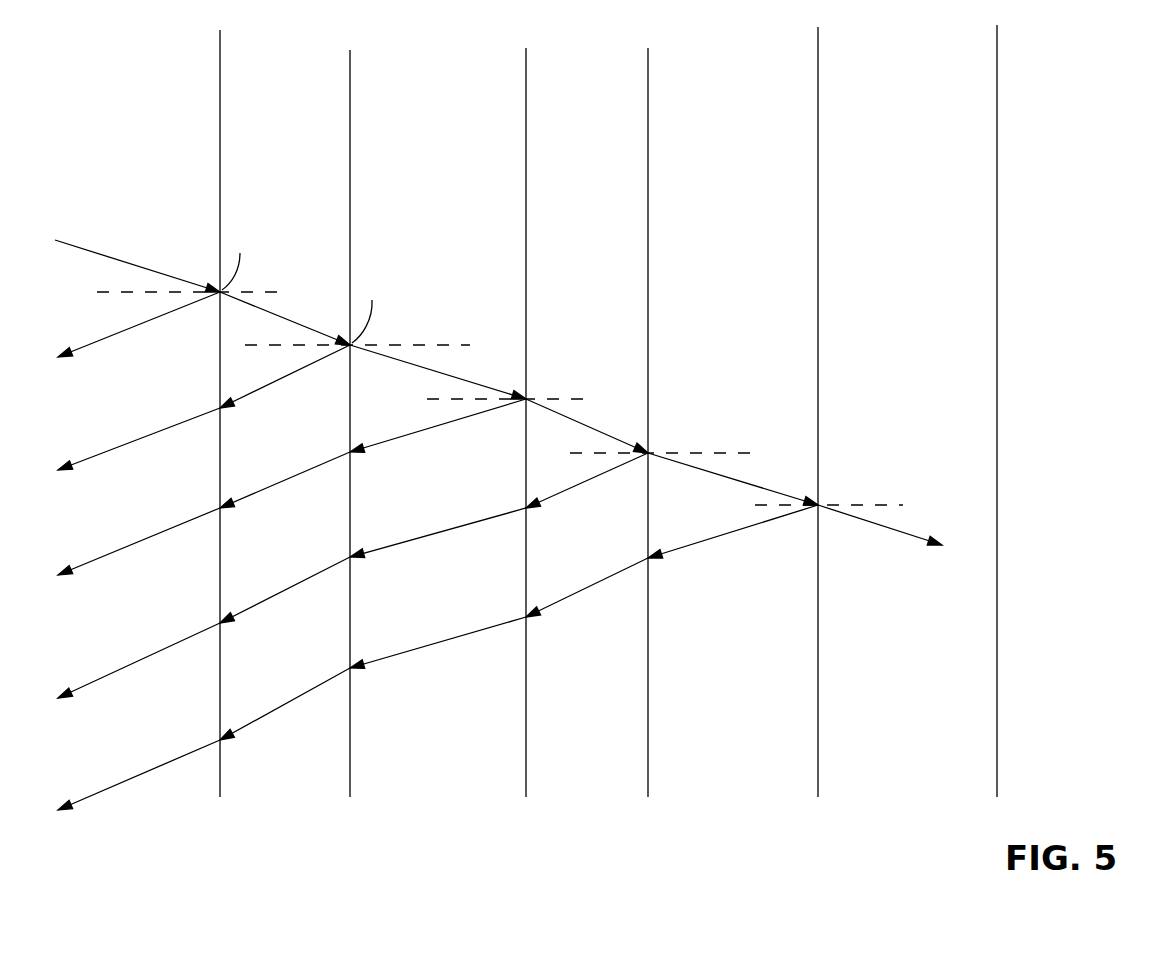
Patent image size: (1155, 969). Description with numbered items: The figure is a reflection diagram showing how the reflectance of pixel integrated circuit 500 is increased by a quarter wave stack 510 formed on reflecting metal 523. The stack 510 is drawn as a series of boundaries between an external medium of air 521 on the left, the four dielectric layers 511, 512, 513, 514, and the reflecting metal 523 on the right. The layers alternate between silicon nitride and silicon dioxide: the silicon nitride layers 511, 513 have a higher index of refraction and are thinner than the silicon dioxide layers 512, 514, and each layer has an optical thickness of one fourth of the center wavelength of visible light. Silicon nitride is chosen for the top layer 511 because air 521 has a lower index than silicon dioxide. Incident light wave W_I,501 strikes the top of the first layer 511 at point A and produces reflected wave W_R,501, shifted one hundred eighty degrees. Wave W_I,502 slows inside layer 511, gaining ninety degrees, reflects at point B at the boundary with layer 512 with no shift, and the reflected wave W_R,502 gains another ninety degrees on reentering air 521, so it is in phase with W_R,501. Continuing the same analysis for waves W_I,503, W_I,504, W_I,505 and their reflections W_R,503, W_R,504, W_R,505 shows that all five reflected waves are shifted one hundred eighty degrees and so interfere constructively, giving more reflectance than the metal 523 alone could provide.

The pixel integrated circuit 500 is at (581, 866).
The quarter wave stack 510 is at (804, 33).
The first dielectric layer 511 is at (336, 66).
The second dielectric layer 512 is at (512, 66).
The third dielectric layer 513 is at (634, 66).
The fourth dielectric layer 514 is at (804, 66).
The air 521 is at (206, 66).
The reflecting metal 523 is at (983, 66).
The light waves W_I,501 and W_R 501 is at (150, 272).
The light waves W_I,502 and W_R 502 is at (300, 325).
The light waves W_I,503 and W_R 503 is at (467, 378).
The light waves W_I,504 and W_R 504 is at (608, 435).
The light waves W_I,505 and W_R 505 is at (768, 483).